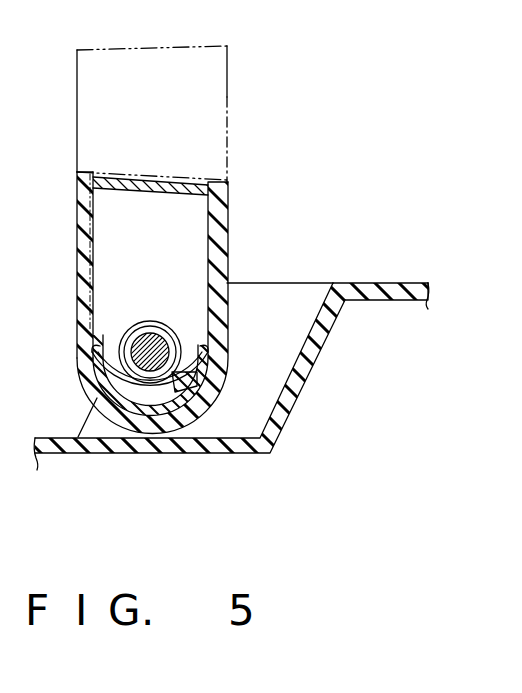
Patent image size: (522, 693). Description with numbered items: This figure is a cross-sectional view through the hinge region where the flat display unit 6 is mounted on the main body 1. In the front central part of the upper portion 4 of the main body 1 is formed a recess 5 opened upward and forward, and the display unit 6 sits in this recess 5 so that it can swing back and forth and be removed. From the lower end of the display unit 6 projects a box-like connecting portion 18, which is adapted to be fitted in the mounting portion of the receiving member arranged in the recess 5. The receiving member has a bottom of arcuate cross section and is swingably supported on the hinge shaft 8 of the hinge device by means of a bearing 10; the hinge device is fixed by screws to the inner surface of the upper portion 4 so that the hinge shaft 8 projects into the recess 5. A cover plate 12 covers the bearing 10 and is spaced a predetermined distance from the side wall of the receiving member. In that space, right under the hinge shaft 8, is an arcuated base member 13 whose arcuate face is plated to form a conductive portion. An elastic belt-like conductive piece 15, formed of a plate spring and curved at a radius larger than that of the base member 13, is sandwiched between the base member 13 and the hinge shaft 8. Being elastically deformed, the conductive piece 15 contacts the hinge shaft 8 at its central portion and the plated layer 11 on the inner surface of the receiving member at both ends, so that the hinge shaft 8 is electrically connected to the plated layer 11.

The main body 1 is at (421, 280).
The upper portion 4 is at (377, 283).
The recess 5 is at (285, 339).
The flat display unit 6 is at (233, 70).
The hinge shaft 8 is at (156, 322).
The bearing 10 is at (168, 325).
The plated layer 11 is at (90, 274).
The cover plate 12 is at (123, 190).
The arcuated base member 13 is at (86, 396).
The conductive piece 15 is at (100, 350).
The connecting portion 18 is at (229, 98).